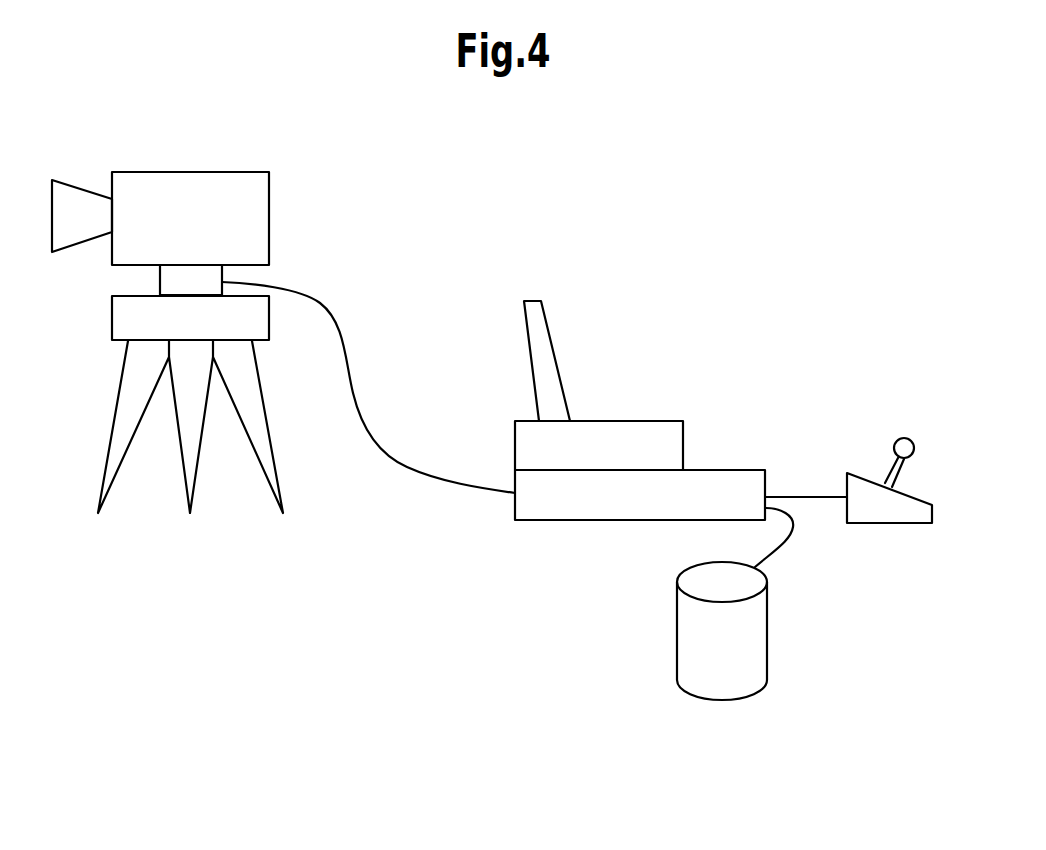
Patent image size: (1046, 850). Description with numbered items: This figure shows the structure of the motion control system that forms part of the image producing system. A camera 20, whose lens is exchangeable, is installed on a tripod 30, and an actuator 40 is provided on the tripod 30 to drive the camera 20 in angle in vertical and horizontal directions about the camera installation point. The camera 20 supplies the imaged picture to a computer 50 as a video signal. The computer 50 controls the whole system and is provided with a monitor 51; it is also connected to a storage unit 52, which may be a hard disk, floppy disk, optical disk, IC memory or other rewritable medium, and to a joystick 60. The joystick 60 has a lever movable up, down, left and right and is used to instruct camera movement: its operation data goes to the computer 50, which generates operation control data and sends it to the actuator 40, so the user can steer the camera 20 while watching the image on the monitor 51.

The camera 20 is at (202, 172).
The tripod 30 is at (273, 342).
The actuator 40 is at (160, 274).
The computer 50 is at (532, 520).
The monitor 51 is at (558, 350).
The storage unit 52 is at (702, 695).
The joystick 60 is at (874, 518).